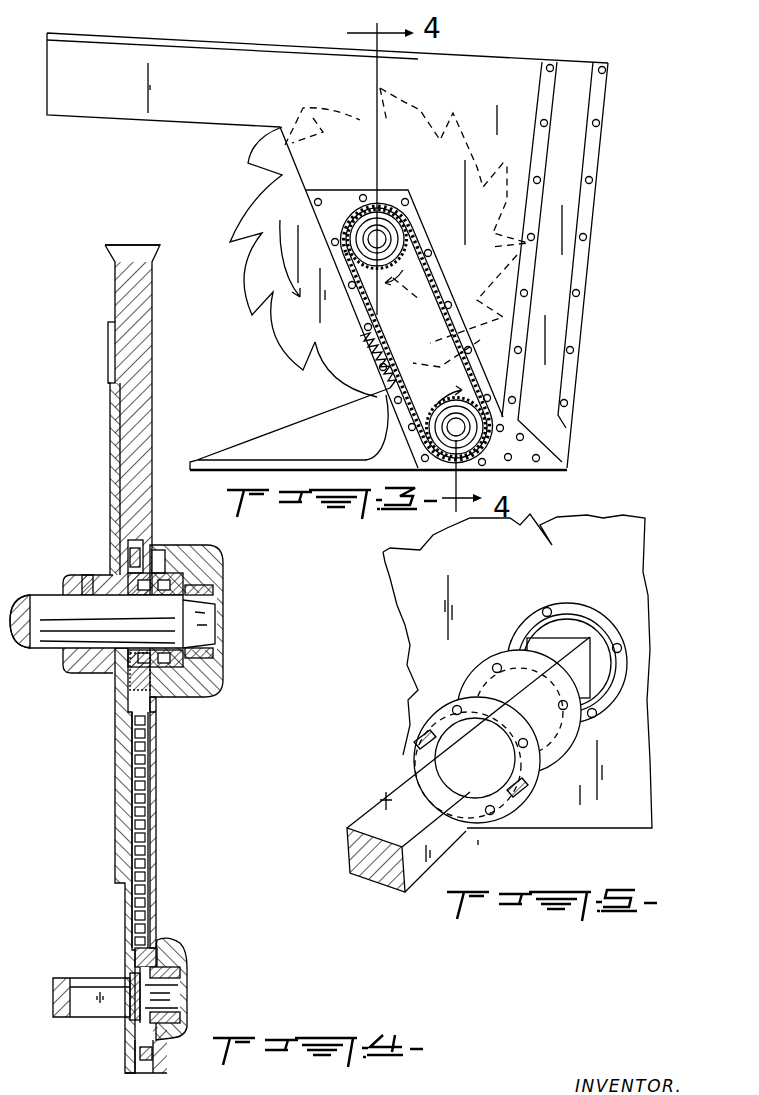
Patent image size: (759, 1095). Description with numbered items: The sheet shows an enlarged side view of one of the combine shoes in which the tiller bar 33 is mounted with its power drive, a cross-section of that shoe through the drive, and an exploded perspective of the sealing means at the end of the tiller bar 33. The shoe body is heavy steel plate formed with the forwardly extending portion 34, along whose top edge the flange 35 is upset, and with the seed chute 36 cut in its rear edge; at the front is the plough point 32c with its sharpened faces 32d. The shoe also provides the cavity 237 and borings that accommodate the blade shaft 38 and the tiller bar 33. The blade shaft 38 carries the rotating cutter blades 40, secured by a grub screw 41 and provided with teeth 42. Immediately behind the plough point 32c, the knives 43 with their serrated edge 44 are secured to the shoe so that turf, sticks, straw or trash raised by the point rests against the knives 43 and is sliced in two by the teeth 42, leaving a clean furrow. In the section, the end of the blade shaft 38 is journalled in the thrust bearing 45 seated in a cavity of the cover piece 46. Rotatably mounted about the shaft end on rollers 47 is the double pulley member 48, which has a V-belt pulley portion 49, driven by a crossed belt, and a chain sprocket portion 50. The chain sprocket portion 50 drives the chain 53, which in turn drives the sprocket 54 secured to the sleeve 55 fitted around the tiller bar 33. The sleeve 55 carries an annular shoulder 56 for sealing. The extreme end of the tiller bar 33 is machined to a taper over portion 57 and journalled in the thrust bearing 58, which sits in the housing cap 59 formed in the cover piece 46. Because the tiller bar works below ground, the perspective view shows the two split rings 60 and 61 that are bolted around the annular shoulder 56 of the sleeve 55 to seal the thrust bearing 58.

In FIG. 3, the plough point 32c is at (190, 470).
In FIG. 3, the sharpened faces 32d is at (500, 75).
In FIG. 4, the sharpened faces 32d is at (140, 301).
In FIG. 5, the sharpened faces 32d is at (596, 526).
In FIG. 4, the tiller bar 33 is at (87, 978).
In FIG. 5, the tiller bar 33 is at (393, 798).
In FIG. 3, the forwardly extending portion 34 is at (137, 53).
In FIG. 3, the flange 35 is at (263, 45).
In FIG. 4, the flange 35 is at (132, 245).
In FIG. 3, the seed chute 36 is at (568, 212).
In FIG. 3, the blade shaft 38 is at (390, 230).
In FIG. 4, the blade shaft 38 is at (50, 616).
In FIG. 4, the rotating cutter blades 40 is at (78, 680).
In FIG. 4, the grub screw 41 is at (87, 580).
In FIG. 3, the teeth 42 is at (262, 291).
In FIG. 4, the teeth 42 is at (108, 348).
In FIG. 3, the knives 43 is at (358, 355).
In FIG. 3, the serrated edge 44 is at (360, 377).
In FIG. 4, the thrust bearing 45 is at (215, 591).
In FIG. 4, the cover piece 46 is at (223, 665).
In FIG. 4, the rollers 47 is at (170, 598).
In FIG. 4, the double pulley member 48 is at (165, 570).
In FIG. 4, the V-belt pulley portion 49 is at (190, 697).
In FIG. 3, the chain sprocket portion 50 is at (395, 260).
In FIG. 4, the chain sprocket portion 50 is at (133, 687).
In FIG. 3, the chain 53 is at (433, 293).
In FIG. 4, the chain 53 is at (140, 831).
In FIG. 3, the sprocket 54 is at (422, 412).
In FIG. 4, the sprocket 54 is at (152, 962).
In FIG. 4, the sleeve 55 is at (150, 997).
In FIG. 4, the annular shoulder 56 is at (128, 1005).
In FIG. 5, the annular shoulder 56 is at (590, 637).
In FIG. 4, the tapered portion 57 is at (190, 1018).
In FIG. 4, the thrust bearing 58 is at (190, 977).
In FIG. 4, the housing cap 59 is at (180, 962).
In FIG. 5, the split ring 60 is at (570, 742).
In FIG. 5, the split ring 61 is at (530, 783).
In FIG. 4, the cavity 237 is at (130, 548).